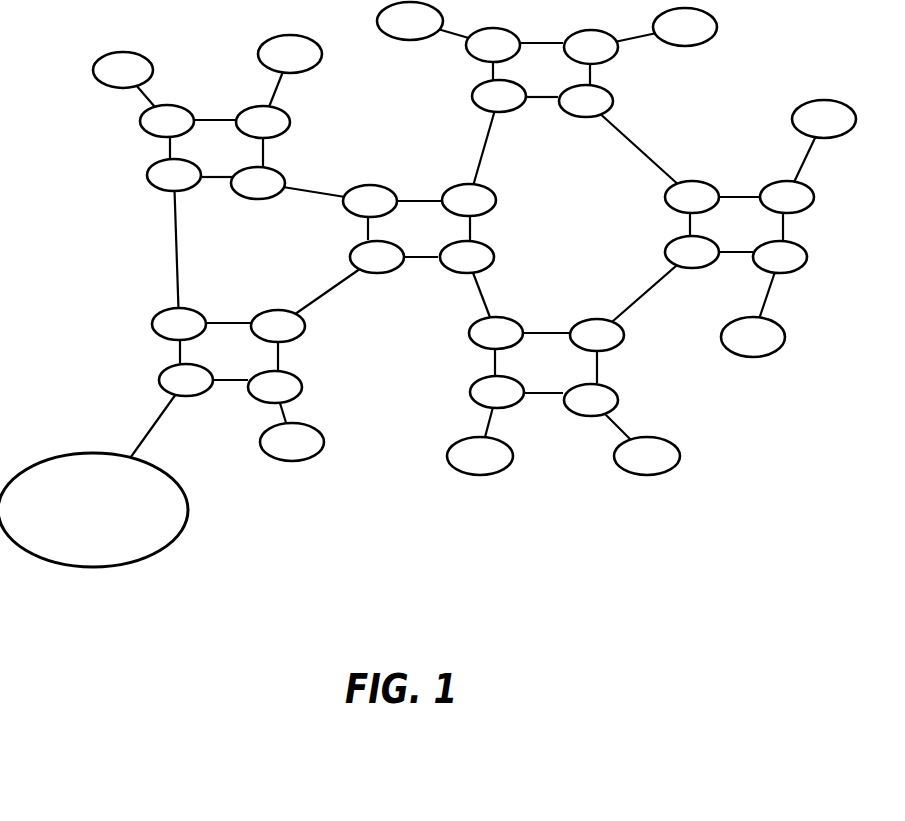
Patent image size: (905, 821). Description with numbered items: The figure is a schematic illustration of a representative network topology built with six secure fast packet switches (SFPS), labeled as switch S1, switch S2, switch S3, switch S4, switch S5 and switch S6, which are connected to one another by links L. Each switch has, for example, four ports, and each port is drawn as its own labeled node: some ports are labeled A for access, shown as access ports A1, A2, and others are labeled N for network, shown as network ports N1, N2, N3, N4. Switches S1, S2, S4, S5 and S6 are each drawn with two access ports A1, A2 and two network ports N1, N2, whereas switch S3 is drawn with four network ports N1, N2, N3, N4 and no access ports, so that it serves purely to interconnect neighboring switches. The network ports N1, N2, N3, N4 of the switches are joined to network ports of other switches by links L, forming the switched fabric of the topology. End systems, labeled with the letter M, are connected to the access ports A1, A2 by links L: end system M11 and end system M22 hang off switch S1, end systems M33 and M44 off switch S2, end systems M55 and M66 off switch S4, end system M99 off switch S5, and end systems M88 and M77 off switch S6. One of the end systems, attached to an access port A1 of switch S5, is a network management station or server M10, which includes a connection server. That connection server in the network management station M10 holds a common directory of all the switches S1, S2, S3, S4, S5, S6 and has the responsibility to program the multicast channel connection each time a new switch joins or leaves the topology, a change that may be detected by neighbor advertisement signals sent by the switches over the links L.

The network management station M10 is at (94, 510).
The end system M11 is at (123, 70).
The end system M22 is at (290, 54).
The end system M33 is at (410, 21).
The end system M44 is at (685, 27).
The end system M55 is at (824, 119).
The end system M66 is at (753, 337).
The end system M77 is at (647, 456).
The end system M88 is at (480, 456).
The end system M99 is at (292, 442).
The secure fast packet switch S1 is at (216, 148).
The secure fast packet switch S2 is at (541, 70).
The secure fast packet switch S3 is at (419, 229).
The secure fast packet switch S4 is at (736, 224).
The secure fast packet switch S5 is at (229, 351).
The secure fast packet switch S6 is at (546, 363).
The link L is at (151, 99).
The access port A1 is at (477, 218).
The access port A2 is at (521, 223).
The network port N1 is at (433, 214).
The network port N2 is at (475, 218).
The network port N3 is at (377, 257).
The network port N4 is at (467, 257).